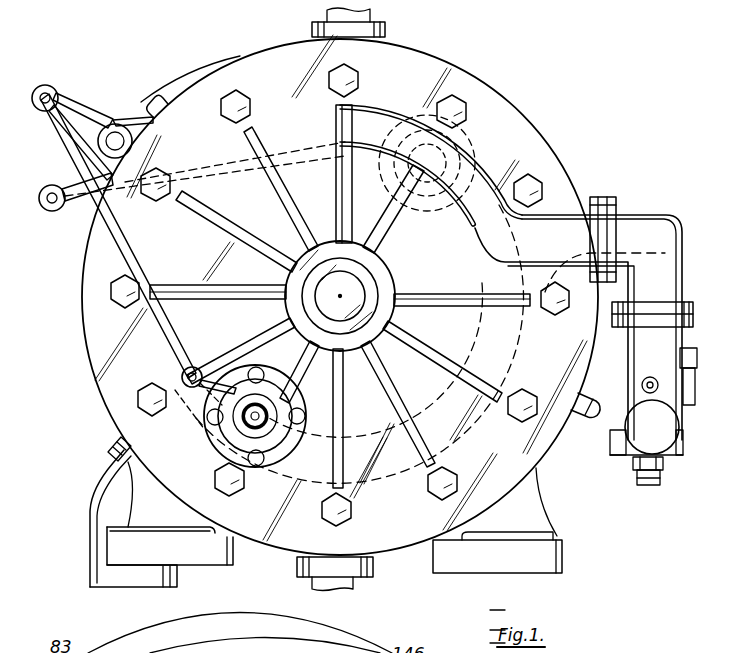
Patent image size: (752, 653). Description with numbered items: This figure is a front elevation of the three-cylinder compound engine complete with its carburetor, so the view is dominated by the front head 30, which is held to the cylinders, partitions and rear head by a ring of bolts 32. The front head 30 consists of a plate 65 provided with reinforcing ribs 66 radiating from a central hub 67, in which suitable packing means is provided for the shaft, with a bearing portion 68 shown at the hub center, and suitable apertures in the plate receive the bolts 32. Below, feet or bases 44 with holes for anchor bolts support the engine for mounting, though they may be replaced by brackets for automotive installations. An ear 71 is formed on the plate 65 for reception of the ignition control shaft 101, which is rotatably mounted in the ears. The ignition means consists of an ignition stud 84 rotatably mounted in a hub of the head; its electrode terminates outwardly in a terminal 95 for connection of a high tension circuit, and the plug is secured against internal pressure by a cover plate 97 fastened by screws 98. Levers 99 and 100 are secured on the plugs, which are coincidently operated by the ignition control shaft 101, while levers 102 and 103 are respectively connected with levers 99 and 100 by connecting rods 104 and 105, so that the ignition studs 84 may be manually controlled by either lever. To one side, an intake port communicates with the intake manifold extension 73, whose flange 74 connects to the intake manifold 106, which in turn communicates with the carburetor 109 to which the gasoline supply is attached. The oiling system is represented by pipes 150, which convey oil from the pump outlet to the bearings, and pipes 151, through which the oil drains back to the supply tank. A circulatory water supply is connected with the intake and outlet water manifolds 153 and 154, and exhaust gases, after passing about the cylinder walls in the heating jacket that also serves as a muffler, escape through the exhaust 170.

The front head 30 is at (90, 352).
The bolts 32 is at (465, 114).
The feet or bases 44 is at (108, 546).
The plate 65 is at (215, 82).
The reinforcing ribs 66 is at (290, 206).
The hub 67 is at (292, 306).
The hub bearing 68 is at (308, 279).
The ear 71 is at (134, 117).
The intake manifold extension 73 is at (483, 181).
The flange 74 is at (597, 197).
The ignition stud 84 is at (412, 222).
The terminal 95 is at (216, 447).
The cover plate 97 is at (283, 452).
The screws 98 is at (292, 408).
The lever 99 is at (190, 392).
The lever 100 is at (336, 184).
The ignition control shaft 101 is at (133, 138).
The lever 102 is at (70, 86).
The lever 103 is at (78, 170).
The connecting rod 104 is at (96, 214).
The connecting rod 105 is at (290, 148).
The intake manifold 106 is at (645, 215).
The carburetor 109 is at (666, 456).
The pipes 150 is at (152, 92).
The pipes 151 is at (592, 420).
The intake water manifold 153 is at (356, 584).
The outlet water manifold 154 is at (372, 13).
The exhaust 170 is at (100, 494).